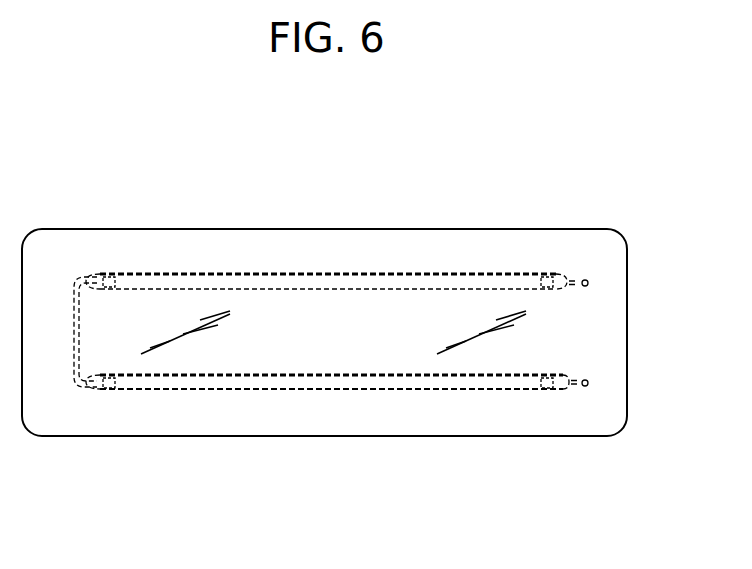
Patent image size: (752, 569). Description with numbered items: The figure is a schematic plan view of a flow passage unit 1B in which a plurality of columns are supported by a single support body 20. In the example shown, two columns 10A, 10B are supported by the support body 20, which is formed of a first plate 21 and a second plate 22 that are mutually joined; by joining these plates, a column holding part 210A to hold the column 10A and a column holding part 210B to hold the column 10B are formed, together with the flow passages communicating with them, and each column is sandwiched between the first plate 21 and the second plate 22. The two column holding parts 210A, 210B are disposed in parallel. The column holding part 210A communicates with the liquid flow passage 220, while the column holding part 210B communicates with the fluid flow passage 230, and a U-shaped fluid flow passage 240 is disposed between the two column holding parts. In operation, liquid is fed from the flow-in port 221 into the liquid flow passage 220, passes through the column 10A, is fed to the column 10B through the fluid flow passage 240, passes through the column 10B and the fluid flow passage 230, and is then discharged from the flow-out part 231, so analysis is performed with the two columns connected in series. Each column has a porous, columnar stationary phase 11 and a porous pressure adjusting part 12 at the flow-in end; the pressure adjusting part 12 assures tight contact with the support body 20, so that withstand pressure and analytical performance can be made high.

The flow passage unit 1B is at (603, 177).
The column 10A is at (267, 269).
The column 10B is at (266, 396).
The stationary phase 11 is at (332, 287).
The pressure adjusting part 12 is at (113, 282).
The support body 20 is at (324, 368).
The first plate 21 is at (324, 368).
The second plate 22 is at (412, 418).
The column holding part 210A is at (562, 279).
The column holding part 210B is at (560, 391).
The liquid flow passage 220 is at (575, 278).
The flow-in port 221 is at (588, 283).
The fluid flow passage 230 is at (578, 390).
The flow-out part 231 is at (588, 383).
The fluid flow passage 240 is at (73, 328).